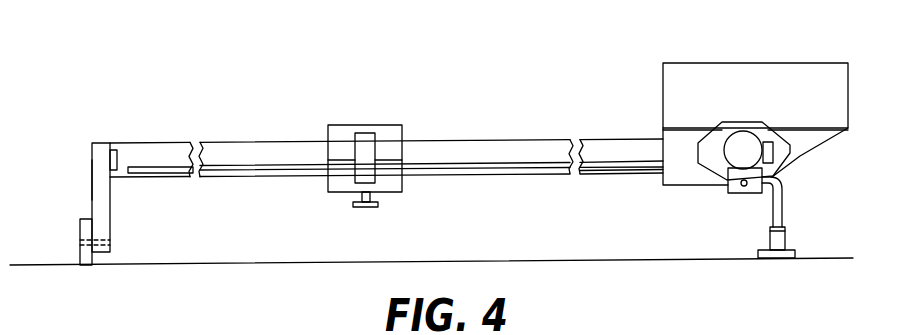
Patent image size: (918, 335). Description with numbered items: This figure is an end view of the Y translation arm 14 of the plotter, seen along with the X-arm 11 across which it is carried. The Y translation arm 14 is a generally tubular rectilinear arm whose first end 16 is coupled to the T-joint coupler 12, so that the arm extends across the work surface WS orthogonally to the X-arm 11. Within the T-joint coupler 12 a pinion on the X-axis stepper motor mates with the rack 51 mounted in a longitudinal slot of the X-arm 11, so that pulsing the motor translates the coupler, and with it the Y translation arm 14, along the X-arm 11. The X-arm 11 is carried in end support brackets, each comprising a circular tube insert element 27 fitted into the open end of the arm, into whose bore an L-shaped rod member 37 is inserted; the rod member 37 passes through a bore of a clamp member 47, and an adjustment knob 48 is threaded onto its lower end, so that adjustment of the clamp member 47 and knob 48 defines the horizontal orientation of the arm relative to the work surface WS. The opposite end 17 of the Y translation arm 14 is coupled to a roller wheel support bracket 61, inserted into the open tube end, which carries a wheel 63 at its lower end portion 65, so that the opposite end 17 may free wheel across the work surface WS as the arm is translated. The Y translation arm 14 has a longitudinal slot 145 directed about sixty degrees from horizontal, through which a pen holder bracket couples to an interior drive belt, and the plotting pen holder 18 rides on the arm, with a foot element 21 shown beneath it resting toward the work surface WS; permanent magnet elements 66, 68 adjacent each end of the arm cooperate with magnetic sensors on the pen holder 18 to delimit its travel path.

The X-axis translation arm 11 is at (745, 131).
The T-joint coupler 12 is at (842, 93).
The Y translation arm 14 is at (467, 147).
The first end of translation arm 16 is at (662, 138).
The opposite end of Y translation arm 17 is at (110, 143).
The plotting pen holder 18 is at (377, 125).
The carriage foot 21 is at (378, 207).
The circular tube insert element 27 is at (738, 193).
The L-shaped rod member 37 is at (782, 207).
The clamp member 47 is at (772, 240).
The adjustment knob 48 is at (795, 253).
The rack 51 is at (777, 152).
The roller wheel support bracket 61 is at (92, 180).
The wheel 63 is at (82, 262).
The lower end portion 65 is at (110, 233).
The permanent magnet element 66 is at (656, 173).
The permanent magnet element 68 is at (148, 177).
The longitudinal slot 145 is at (283, 176).
The work surface WS is at (577, 262).